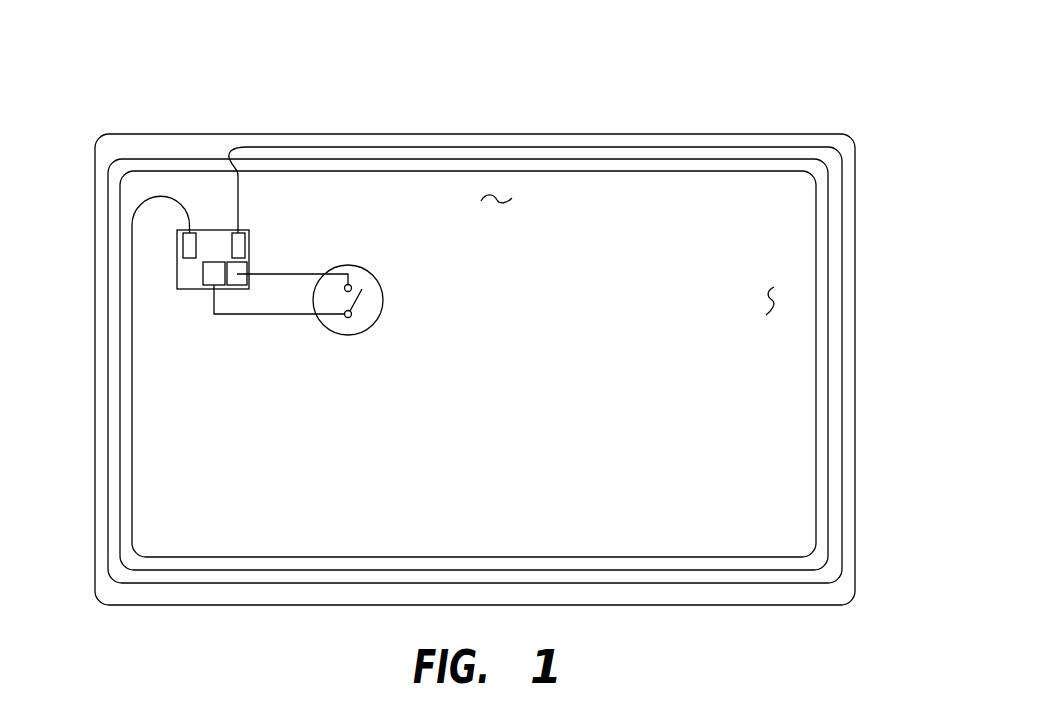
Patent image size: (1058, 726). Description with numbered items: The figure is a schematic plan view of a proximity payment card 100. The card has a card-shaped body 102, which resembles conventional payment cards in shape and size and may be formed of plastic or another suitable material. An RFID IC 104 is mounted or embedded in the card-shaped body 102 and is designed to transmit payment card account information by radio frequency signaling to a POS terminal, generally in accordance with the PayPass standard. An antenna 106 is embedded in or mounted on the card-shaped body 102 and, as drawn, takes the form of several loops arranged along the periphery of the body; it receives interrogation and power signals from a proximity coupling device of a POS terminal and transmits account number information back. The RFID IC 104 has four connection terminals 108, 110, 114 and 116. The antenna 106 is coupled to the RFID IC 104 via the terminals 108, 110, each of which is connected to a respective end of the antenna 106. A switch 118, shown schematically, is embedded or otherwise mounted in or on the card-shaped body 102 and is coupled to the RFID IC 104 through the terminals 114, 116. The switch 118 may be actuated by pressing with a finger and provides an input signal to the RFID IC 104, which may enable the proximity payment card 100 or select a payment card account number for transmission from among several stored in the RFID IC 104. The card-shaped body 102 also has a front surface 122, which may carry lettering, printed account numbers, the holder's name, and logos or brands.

The proximity payment card 100 is at (673, 79).
The card-shaped body 102 is at (496, 196).
The RFID IC 104 is at (203, 230).
The antenna 106 is at (781, 147).
The connection terminal 108 is at (178, 246).
The connection terminal 110 is at (246, 248).
The connection terminal 114 is at (215, 262).
The connection terminal 116 is at (247, 268).
The switch 118 is at (360, 263).
The front surface 122 is at (772, 300).